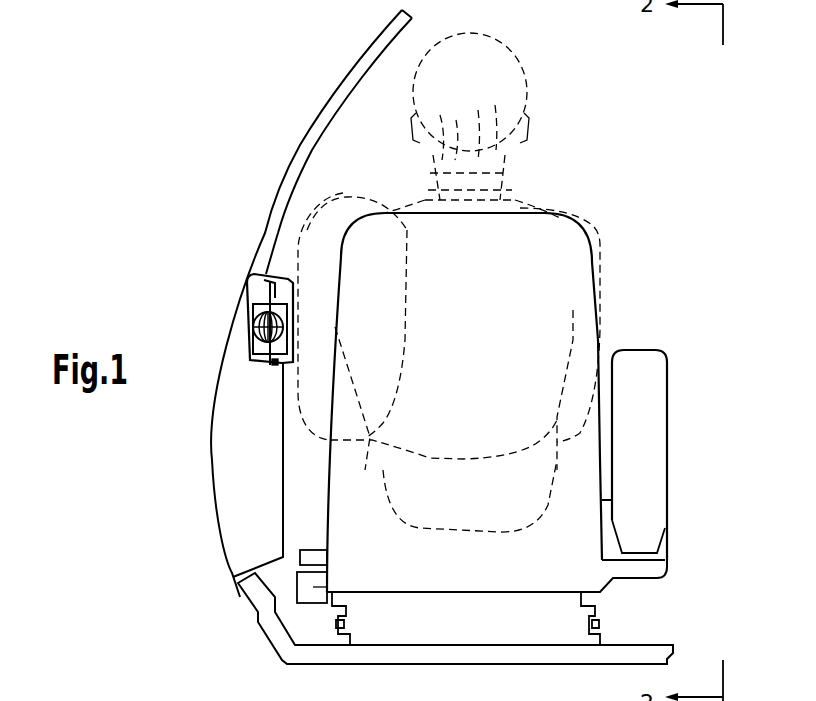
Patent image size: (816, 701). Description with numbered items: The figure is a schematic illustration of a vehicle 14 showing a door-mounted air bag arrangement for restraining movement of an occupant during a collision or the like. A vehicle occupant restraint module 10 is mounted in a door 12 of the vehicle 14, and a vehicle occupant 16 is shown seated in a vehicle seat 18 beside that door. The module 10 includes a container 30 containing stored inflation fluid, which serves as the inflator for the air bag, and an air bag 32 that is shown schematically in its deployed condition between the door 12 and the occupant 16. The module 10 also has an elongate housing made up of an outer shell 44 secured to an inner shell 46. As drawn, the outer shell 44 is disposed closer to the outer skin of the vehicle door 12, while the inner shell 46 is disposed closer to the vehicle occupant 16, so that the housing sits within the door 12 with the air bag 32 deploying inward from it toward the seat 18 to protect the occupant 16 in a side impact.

The vehicle occupant restraint module 10 is at (240, 293).
The door 12 is at (212, 467).
The vehicle 14 is at (215, 607).
The vehicle occupant 16 is at (507, 157).
The vehicle seat 18 is at (592, 288).
The container 30 is at (251, 333).
The air bag 32 is at (343, 193).
The outer shell 44 is at (268, 356).
The inner shell 46 is at (293, 292).